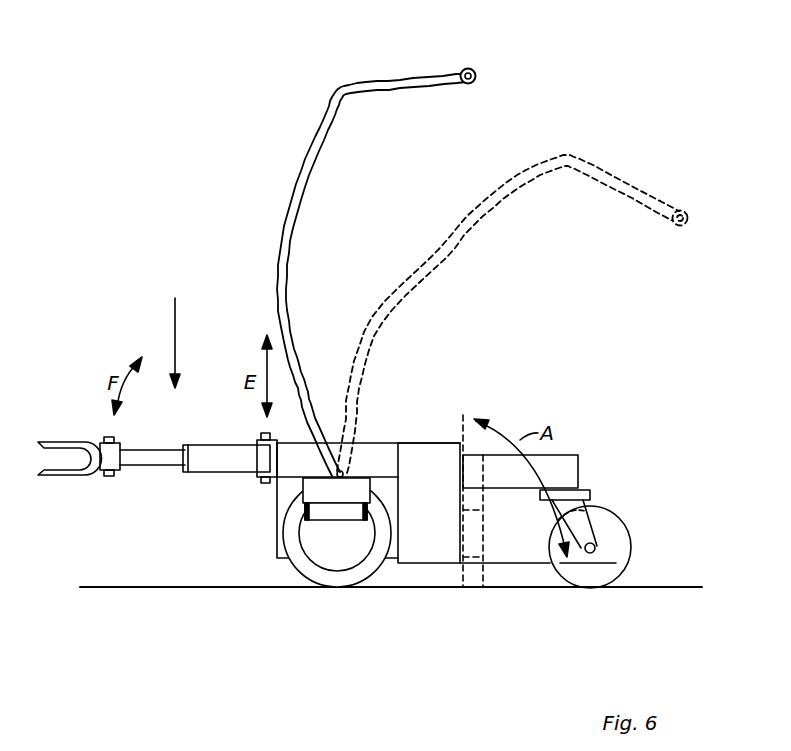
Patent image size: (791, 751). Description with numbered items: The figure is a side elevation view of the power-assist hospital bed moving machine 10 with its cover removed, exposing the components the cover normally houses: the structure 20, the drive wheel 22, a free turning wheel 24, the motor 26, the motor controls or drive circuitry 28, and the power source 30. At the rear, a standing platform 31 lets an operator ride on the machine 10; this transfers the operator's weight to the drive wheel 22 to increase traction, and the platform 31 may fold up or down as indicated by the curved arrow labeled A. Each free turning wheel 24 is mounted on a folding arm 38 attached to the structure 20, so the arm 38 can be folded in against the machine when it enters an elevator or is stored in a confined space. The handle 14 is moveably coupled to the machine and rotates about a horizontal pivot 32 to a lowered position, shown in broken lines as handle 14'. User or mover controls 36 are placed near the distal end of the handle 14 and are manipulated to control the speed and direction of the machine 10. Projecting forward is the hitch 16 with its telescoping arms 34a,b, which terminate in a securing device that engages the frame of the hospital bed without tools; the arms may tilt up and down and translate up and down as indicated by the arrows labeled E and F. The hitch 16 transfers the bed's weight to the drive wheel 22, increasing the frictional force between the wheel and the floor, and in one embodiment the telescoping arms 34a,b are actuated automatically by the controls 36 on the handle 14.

The machine 10 is at (201, 137).
The handle 14 is at (371, 266).
The handle in lowered position 14' is at (512, 312).
The hitch 16 is at (174, 329).
The structure 20 is at (378, 460).
The drive wheel 22 is at (370, 573).
The free turning wheel 24 is at (630, 523).
The motor 26 is at (332, 558).
The motor controls 28 is at (302, 493).
The power source 30 is at (432, 548).
The standing platform 31 is at (517, 567).
The horizontal pivot 32 is at (345, 472).
The telescoping arms 34a,b is at (138, 472).
The controls 36 is at (470, 87).
The folding arm 38 is at (572, 470).